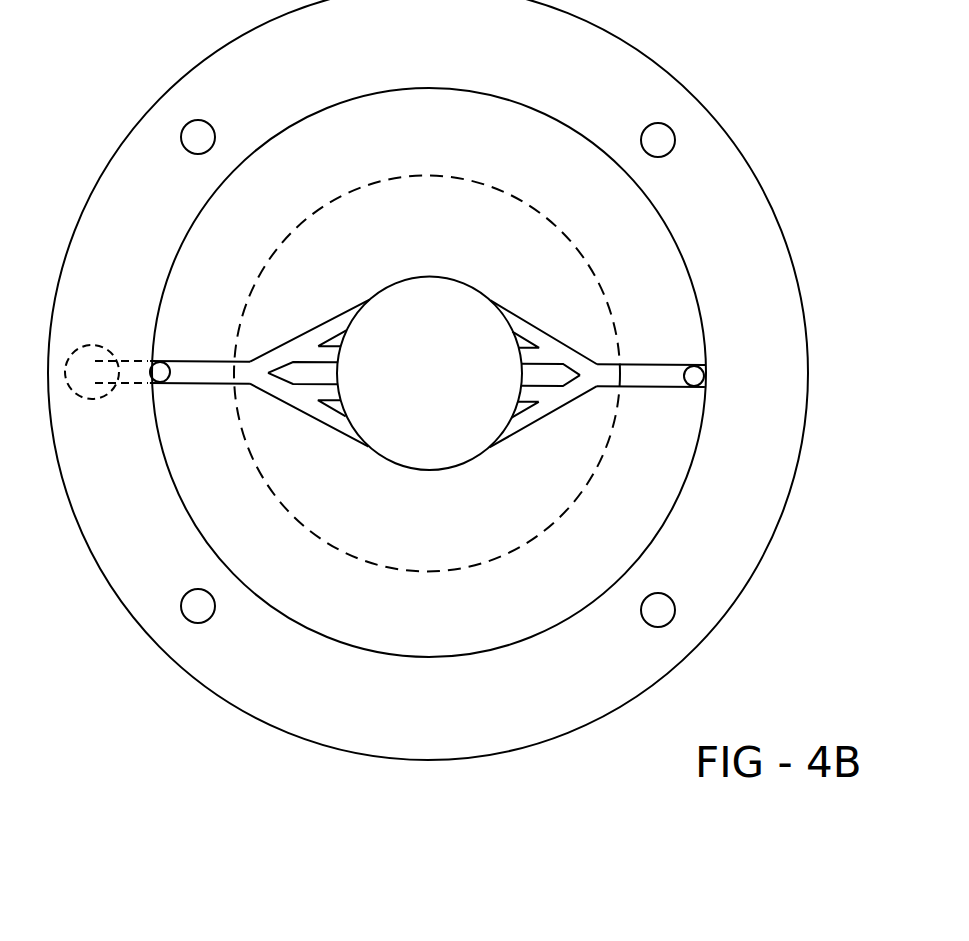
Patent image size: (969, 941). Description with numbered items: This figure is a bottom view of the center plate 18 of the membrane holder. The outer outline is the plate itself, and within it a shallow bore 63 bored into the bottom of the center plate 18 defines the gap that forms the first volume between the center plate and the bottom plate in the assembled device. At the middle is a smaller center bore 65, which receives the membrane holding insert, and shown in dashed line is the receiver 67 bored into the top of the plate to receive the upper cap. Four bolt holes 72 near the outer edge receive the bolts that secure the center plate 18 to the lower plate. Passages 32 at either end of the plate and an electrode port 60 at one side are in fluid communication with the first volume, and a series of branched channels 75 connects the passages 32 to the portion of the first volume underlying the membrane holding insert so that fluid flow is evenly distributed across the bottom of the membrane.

The center plate 18 is at (110, 173).
The shallow bore 63 is at (322, 142).
The receiver 67 is at (448, 193).
The center bore 65 is at (435, 307).
The bolt holes 72 is at (203, 142).
The passages 32 is at (162, 362).
The electrode port 60 is at (88, 348).
The branched channels 75 is at (330, 323).